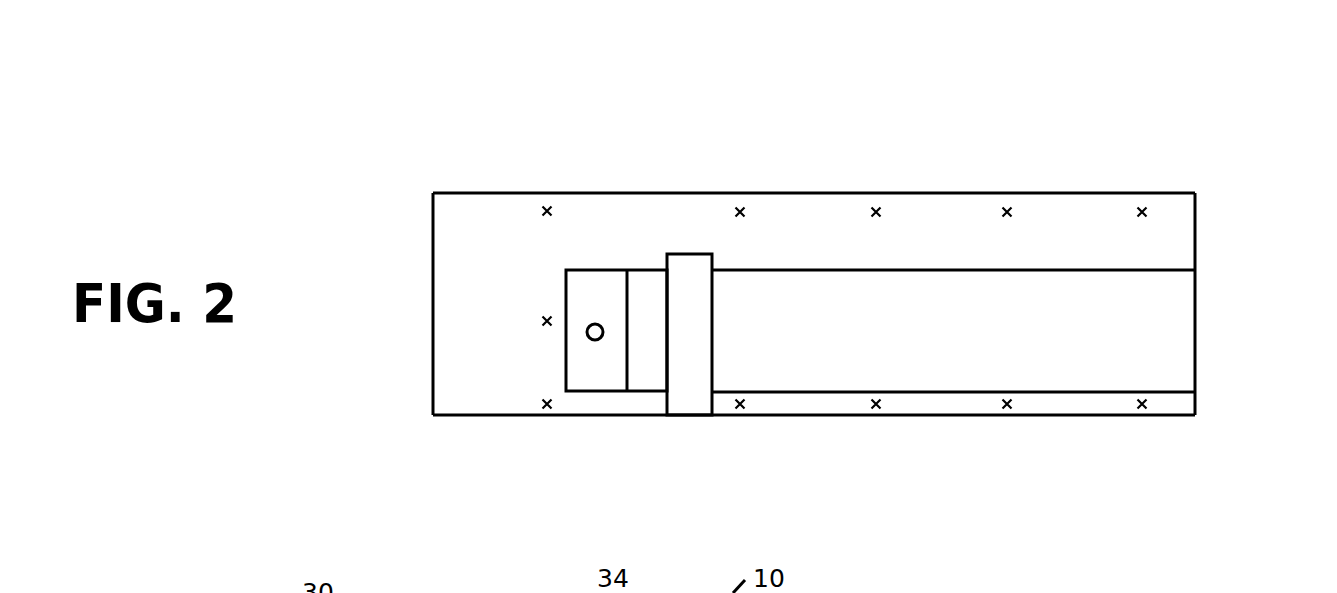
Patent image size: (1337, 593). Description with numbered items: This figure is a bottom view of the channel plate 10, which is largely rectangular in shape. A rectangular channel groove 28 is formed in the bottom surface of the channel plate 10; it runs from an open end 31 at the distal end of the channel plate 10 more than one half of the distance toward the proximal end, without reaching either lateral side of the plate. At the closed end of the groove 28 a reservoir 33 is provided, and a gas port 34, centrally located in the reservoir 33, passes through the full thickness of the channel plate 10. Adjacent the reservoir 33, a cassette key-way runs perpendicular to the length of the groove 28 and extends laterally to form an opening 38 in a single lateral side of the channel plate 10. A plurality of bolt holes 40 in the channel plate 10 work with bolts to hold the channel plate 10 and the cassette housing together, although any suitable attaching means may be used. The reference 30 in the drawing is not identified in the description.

The channel plate 10 is at (707, 130).
The channel groove 28 is at (908, 333).
The left end wall 30 is at (432, 310).
The open end 31 is at (1195, 333).
The reservoir 33 is at (594, 357).
The gas port 34 is at (595, 324).
The opening 38 is at (683, 415).
The bolt holes 40 is at (1143, 197).